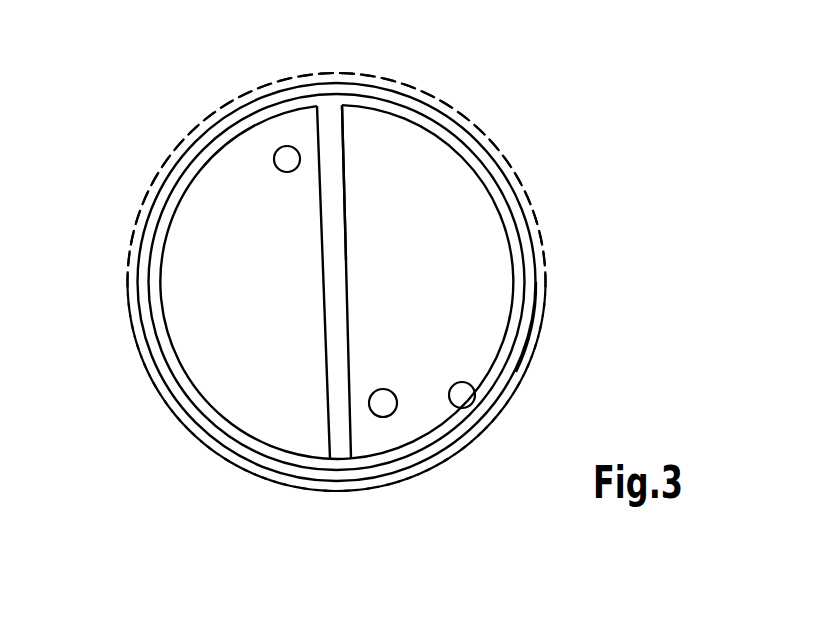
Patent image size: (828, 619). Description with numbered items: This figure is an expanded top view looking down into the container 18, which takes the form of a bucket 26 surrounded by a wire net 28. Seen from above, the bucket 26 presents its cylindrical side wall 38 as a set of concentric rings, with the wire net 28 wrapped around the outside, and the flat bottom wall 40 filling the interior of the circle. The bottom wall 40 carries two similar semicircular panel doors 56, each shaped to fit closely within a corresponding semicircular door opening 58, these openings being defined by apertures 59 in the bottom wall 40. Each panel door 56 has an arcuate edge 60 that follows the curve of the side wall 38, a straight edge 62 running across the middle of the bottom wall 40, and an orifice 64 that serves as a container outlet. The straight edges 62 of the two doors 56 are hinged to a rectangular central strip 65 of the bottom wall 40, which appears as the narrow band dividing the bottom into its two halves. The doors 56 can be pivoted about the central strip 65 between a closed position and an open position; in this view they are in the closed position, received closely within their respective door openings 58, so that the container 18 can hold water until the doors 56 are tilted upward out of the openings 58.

The container 18 is at (517, 97).
The bucket 26 is at (532, 318).
The wire net 28 is at (537, 342).
The cylindrical side wall 38 is at (518, 370).
The flat bottom wall 40 is at (150, 288).
The semicircular panel door 56 is at (213, 202).
The semicircular door opening 58 is at (235, 180).
The aperture 59 is at (474, 404).
The arcuate edge 60 is at (263, 118).
The straight edge 62 is at (322, 137).
The orifice 64 is at (281, 172).
The rectangular central strip 65 is at (330, 138).